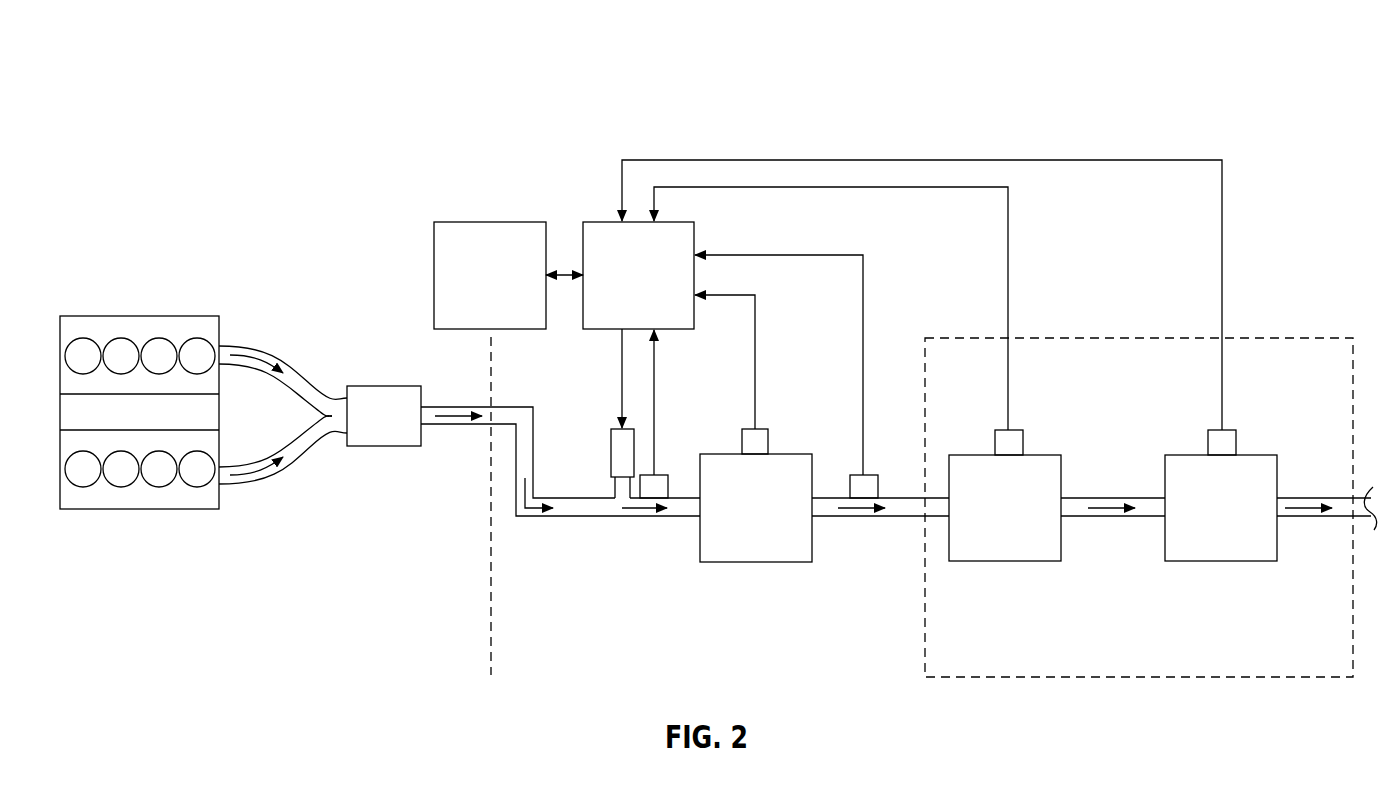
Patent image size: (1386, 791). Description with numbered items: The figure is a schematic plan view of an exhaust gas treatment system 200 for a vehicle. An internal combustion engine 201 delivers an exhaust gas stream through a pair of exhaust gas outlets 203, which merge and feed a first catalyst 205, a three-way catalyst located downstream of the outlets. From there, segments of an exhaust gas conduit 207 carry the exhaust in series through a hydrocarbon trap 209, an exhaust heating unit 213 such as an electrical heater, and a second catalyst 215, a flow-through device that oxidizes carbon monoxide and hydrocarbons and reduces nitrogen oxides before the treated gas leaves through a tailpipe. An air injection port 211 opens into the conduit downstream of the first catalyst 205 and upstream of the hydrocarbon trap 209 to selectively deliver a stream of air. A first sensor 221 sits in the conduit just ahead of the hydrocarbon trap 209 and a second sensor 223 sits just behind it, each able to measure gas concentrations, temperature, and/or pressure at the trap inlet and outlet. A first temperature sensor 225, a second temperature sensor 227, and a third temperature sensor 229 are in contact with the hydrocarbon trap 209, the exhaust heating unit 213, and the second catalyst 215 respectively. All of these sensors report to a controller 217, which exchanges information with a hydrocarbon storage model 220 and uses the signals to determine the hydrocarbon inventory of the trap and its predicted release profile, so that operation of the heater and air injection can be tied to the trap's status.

The exhaust gas treatment system 200 is at (155, 78).
The internal combustion engine 201 is at (105, 316).
The exhaust gas outlet 203 is at (245, 346).
The first catalyst 205 is at (387, 386).
The exhaust gas conduit 207 is at (615, 518).
The hydrocarbon trap 209 is at (755, 562).
The air injection port 211 is at (611, 452).
The exhaust heating unit 213 is at (1003, 562).
The second catalyst 215 is at (1222, 562).
The controller 217 is at (598, 222).
The hydrocarbon storage model 220 is at (490, 222).
The first sensor 221 is at (665, 475).
The second sensor 223 is at (870, 475).
The first temperature sensor 225 is at (765, 429).
The second temperature sensor 227 is at (1024, 445).
The third temperature sensor 229 is at (1237, 445).